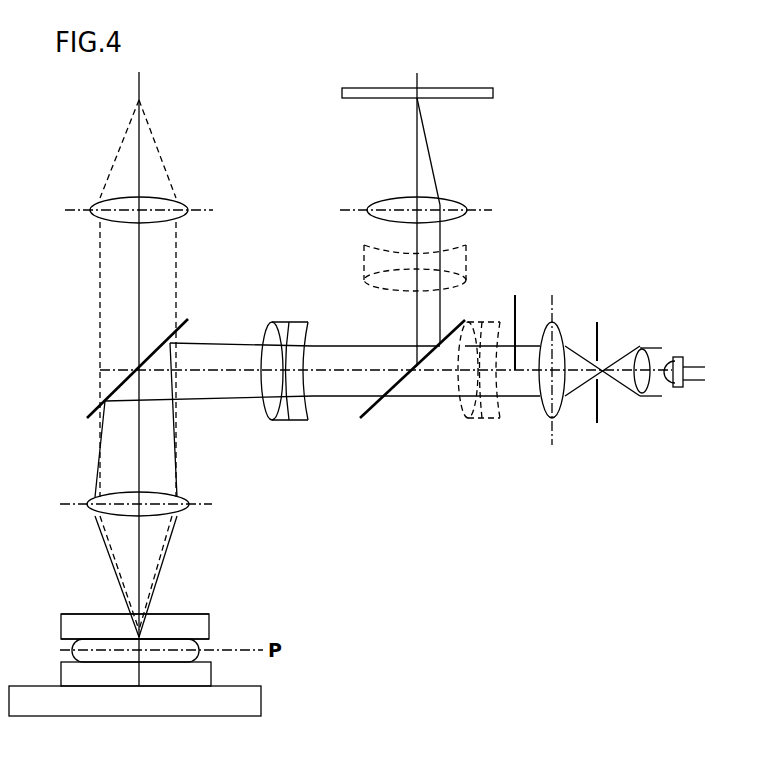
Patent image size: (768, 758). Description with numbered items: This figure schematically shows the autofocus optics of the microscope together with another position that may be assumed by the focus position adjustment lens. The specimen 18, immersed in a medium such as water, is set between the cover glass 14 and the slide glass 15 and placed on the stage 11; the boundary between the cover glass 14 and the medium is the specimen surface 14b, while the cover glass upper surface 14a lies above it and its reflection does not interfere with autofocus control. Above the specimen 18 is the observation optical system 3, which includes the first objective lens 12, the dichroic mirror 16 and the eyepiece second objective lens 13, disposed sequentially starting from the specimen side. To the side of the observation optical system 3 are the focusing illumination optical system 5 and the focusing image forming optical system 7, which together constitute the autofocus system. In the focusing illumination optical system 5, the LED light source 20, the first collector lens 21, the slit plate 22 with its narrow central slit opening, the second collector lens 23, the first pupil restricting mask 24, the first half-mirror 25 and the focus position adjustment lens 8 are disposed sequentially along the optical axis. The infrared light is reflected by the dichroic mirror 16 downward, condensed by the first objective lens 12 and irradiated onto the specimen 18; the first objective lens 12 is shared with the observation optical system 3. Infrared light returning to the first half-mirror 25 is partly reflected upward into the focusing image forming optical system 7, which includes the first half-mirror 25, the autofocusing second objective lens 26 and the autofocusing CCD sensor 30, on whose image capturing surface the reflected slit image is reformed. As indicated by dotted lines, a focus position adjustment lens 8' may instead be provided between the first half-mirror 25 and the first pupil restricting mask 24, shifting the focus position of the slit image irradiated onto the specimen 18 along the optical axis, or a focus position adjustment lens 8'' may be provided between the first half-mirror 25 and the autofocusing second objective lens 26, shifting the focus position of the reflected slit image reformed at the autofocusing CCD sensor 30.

The observation optical system 3 is at (58, 478).
The focusing illumination optical system 5 is at (409, 487).
The focusing image forming optical system 7 is at (524, 184).
The focus position adjustment lens 8 is at (284, 348).
The focus position adjustment lens 8' is at (479, 395).
The focus position adjustment lens 8'' is at (437, 256).
The stage 11 is at (261, 704).
The first objective lens 12 is at (188, 504).
The eyepiece second objective lens 13 is at (90, 210).
The cover glass 14 is at (209, 620).
The cover glass upper surface 14a is at (61, 614).
The specimen surface 14b is at (72, 641).
The slide glass 15 is at (211, 680).
The dichroic mirror 16 is at (87, 418).
The specimen 18 is at (199, 645).
The LED light source 20 is at (686, 360).
The first collector lens 21 is at (645, 398).
The slit plate 22 is at (600, 330).
The second collector lens 23 is at (552, 418).
The first pupil restricting mask 24 is at (515, 295).
The first half-mirror 25 is at (362, 418).
The autofocusing second objective lens 26 is at (467, 210).
The autofocusing CCD sensor 30 is at (493, 92).